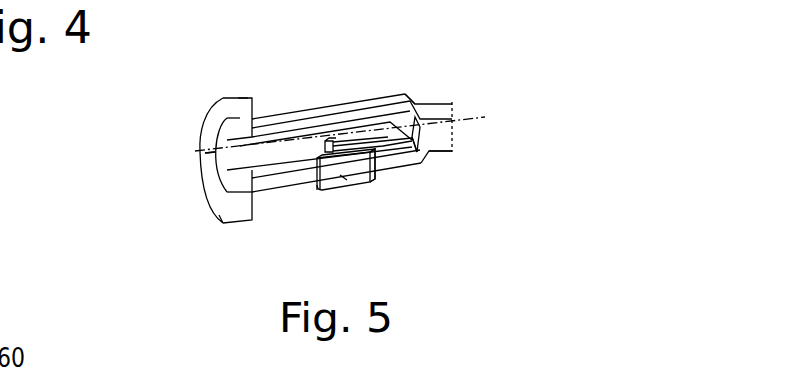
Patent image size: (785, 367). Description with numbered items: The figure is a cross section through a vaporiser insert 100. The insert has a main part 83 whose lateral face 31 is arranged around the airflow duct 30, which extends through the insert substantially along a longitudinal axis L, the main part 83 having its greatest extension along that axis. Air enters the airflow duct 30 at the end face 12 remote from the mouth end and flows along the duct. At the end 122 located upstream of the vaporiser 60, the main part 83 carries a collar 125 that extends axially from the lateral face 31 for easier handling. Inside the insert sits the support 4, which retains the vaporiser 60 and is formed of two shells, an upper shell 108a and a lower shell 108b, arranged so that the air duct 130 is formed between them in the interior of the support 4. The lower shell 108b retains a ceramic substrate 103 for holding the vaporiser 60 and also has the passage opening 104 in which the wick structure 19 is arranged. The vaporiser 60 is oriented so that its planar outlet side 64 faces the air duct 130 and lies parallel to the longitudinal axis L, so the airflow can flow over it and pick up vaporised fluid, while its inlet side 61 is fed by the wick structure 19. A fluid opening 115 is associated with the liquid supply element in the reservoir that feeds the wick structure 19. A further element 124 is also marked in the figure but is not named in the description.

The support 4 is at (210, 152).
The end face 12 is at (205, 122).
The wick structure 19 is at (343, 180).
The airflow duct 30 is at (455, 137).
The lateral face 31 is at (281, 112).
The vaporiser 60 is at (323, 190).
The inlet side 61 is at (374, 160).
The outlet side 64 is at (327, 142).
The main part 83 is at (447, 156).
The vaporiser insert 100 is at (121, 188).
The ceramic substrate 103 is at (414, 120).
The passage opening 104 is at (363, 140).
The upper shell 108a is at (259, 145).
The lower shell 108b is at (216, 190).
The fluid opening 115 is at (315, 184).
The end 122 is at (210, 208).
The wedge lower end 124 is at (417, 153).
The collar 125 is at (232, 100).
The air duct 130 is at (425, 105).
The longitudinal axis L is at (346, 130).